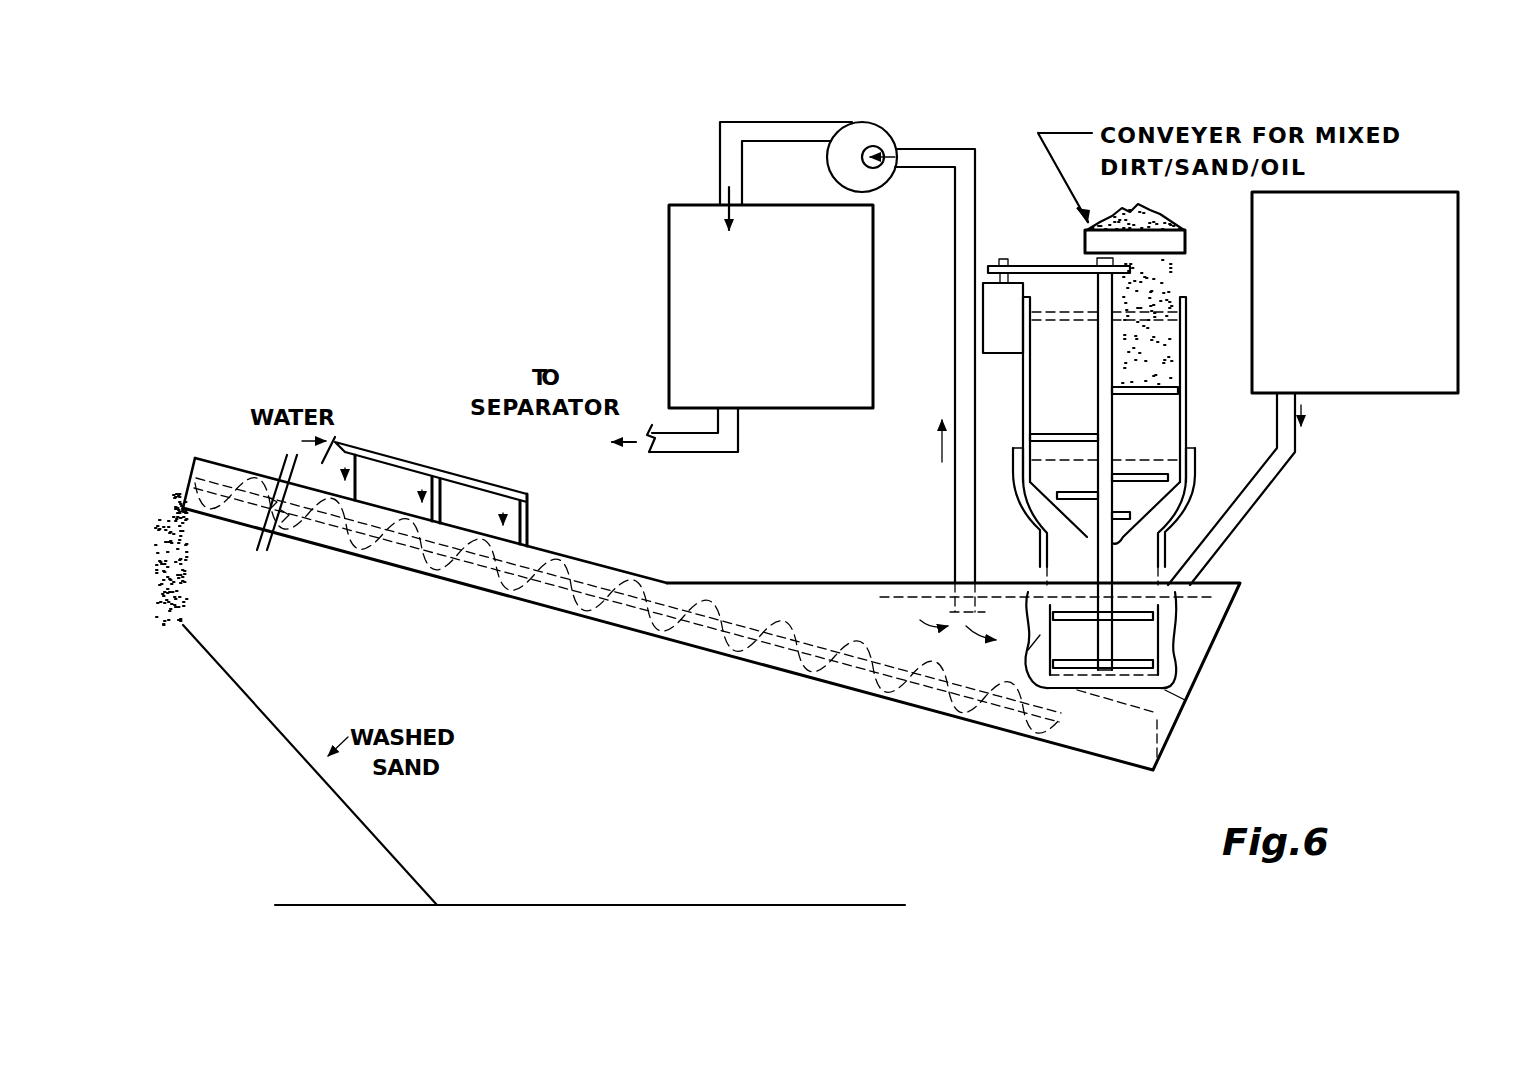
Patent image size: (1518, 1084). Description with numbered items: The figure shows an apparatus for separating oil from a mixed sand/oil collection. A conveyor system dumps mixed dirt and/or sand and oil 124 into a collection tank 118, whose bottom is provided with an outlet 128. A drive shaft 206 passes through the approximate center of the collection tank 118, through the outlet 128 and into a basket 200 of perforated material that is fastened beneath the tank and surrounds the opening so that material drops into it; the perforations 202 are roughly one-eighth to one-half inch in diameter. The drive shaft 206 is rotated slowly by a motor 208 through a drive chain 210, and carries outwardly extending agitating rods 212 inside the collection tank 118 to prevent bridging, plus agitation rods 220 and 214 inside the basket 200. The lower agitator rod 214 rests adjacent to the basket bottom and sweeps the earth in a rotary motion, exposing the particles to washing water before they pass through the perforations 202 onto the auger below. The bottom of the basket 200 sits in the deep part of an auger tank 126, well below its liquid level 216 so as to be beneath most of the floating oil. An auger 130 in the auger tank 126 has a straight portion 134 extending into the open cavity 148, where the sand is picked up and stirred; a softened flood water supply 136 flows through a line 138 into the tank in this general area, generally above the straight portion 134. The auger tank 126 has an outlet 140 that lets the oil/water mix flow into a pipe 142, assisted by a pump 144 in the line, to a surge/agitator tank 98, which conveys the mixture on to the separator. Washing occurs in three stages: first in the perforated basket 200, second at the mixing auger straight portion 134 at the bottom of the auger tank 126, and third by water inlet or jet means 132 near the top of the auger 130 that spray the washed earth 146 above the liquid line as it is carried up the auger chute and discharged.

The surge/agitator tank 98 is at (670, 295).
The pump 144 is at (912, 118).
The pipe 142 is at (954, 366).
The drive chain 210 is at (1013, 267).
The motor 208 is at (983, 307).
The drive shaft 206 is at (1104, 352).
The mixed dirt and/or sand and oil 124 is at (1164, 280).
The collection tank 118 is at (1187, 400).
The agitating rods 212 is at (1052, 434).
The softened flood water supply 136 is at (1421, 393).
The line 138 is at (1296, 453).
The outlet 128 is at (1165, 548).
The straight portion 134 is at (1090, 742).
The auger tank 126 is at (1145, 669).
The basket 200 is at (1178, 650).
The perforations 202 is at (1180, 645).
The lower agitator rod 214 is at (1080, 665).
The open cavity 148 is at (1166, 692).
The agitation rod 220 is at (1060, 625).
The liquid level 216 is at (985, 600).
The outlet 140 is at (946, 620).
The auger 130 is at (690, 644).
The water inlet or jet means 132 is at (526, 519).
The earth 146 is at (185, 578).